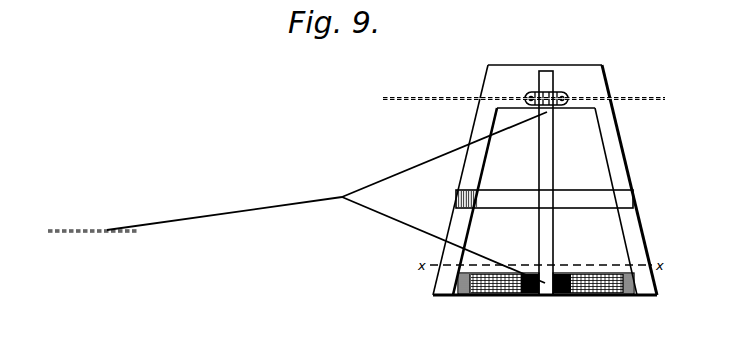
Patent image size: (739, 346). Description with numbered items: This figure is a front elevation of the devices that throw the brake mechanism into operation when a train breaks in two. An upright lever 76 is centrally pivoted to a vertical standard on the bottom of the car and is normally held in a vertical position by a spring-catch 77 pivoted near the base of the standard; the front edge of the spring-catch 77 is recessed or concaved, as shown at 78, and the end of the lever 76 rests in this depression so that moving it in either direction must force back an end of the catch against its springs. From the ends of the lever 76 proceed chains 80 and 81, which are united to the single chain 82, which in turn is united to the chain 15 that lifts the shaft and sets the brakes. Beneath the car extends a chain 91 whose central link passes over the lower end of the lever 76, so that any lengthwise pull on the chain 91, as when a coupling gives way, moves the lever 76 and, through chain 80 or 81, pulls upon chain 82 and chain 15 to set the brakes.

The chain 15 is at (139, 232).
The upright lever 76 is at (560, 222).
The spring-catch 77 is at (590, 272).
The recess 78 is at (597, 295).
The chain 80 is at (400, 172).
The chain 81 is at (443, 240).
The single chain 82 is at (222, 211).
The chain 91 is at (524, 89).